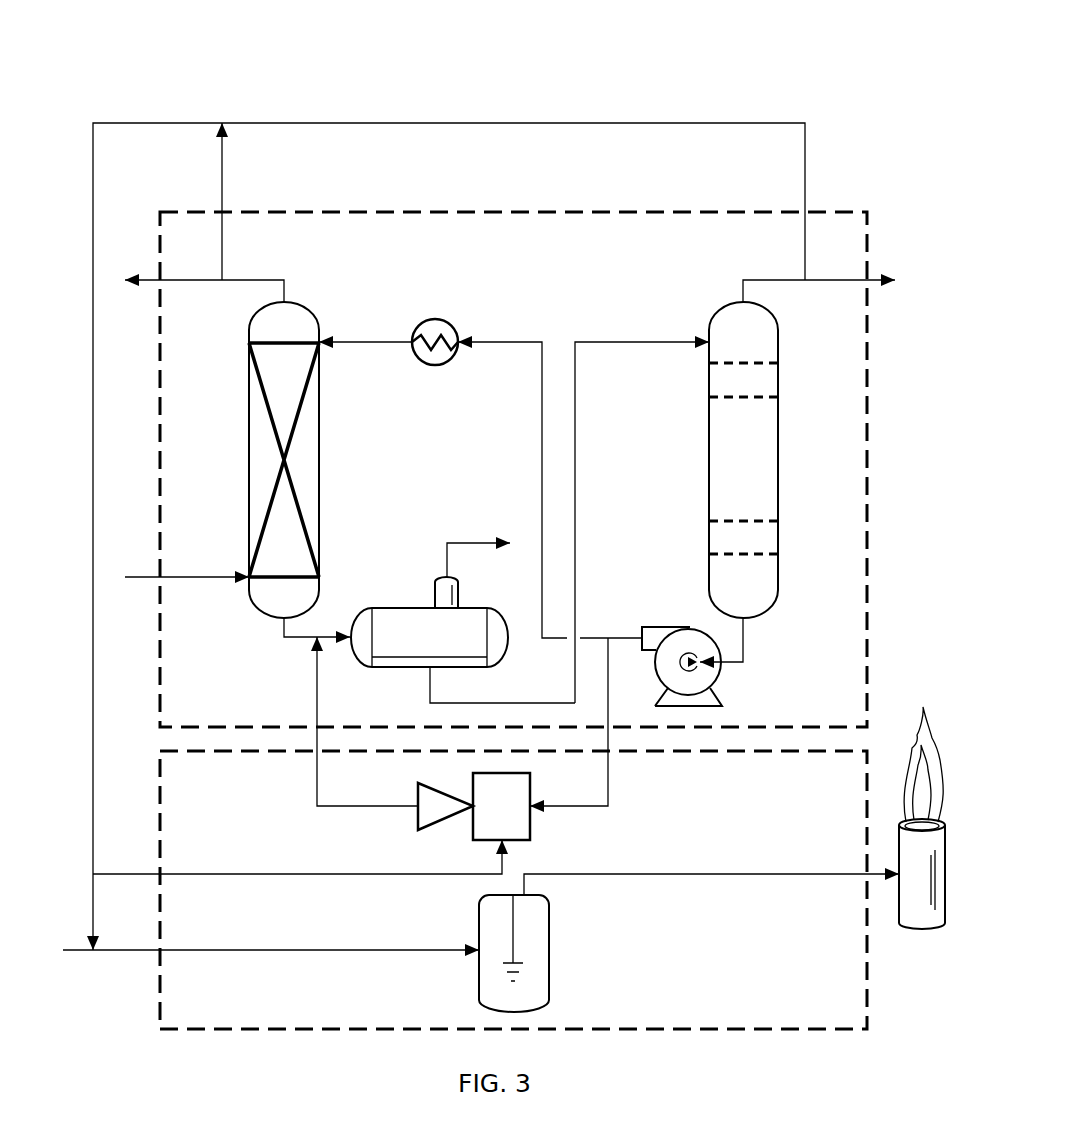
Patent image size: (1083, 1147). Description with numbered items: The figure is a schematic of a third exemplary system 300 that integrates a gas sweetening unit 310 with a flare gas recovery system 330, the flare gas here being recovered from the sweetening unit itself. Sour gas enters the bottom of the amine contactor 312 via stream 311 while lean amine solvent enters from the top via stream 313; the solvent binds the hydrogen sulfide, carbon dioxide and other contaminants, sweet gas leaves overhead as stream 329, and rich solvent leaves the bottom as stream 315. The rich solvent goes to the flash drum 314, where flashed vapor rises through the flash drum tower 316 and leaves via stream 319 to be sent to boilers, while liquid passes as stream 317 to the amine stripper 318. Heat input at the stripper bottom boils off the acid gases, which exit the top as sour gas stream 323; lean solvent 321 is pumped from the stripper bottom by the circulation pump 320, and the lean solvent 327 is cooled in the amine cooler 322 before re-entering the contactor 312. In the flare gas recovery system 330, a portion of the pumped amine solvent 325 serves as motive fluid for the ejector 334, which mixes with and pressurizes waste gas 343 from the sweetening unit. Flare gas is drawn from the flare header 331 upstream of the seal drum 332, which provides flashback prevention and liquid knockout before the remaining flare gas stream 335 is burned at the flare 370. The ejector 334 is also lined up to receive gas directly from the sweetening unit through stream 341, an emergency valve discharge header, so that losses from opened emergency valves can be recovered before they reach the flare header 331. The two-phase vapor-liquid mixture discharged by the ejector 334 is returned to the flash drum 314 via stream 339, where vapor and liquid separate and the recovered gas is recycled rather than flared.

The system 300 is at (424, 72).
The gas sweetening unit 310 is at (570, 204).
The feed stream 311 is at (206, 577).
The amine contactor 312 is at (249, 455).
The recycle stream 313 is at (366, 342).
The flash drum 314 is at (410, 608).
The reactor effluent stream 315 is at (300, 655).
The flash drum tower 316 is at (458, 594).
The column feed stream 317 is at (626, 342).
The amine stripper 318 is at (778, 455).
The vapor outlet stream 319 is at (472, 543).
The circulation pump 320 is at (663, 627).
The column bottoms stream 321 is at (743, 644).
The amine cooler 322 is at (438, 319).
The column overhead stream 323 is at (776, 280).
The amine solvent 325 is at (608, 782).
The pump discharge stream 327 is at (494, 342).
The sweet gas stream 329 is at (254, 280).
The flare gas recovery system 330 is at (878, 972).
The flare header 331 is at (318, 950).
The seal drum 332 is at (549, 963).
The ejector 334 is at (530, 822).
The flare stream 335 is at (684, 874).
The stream 339 is at (370, 806).
The stream 341 is at (348, 123).
The waste gas 343 is at (318, 874).
The flare stack 370 is at (945, 905).